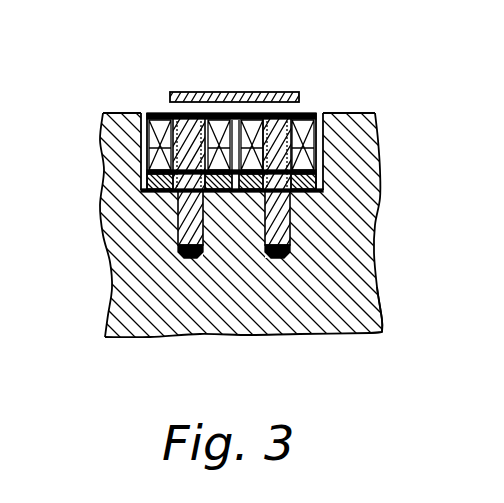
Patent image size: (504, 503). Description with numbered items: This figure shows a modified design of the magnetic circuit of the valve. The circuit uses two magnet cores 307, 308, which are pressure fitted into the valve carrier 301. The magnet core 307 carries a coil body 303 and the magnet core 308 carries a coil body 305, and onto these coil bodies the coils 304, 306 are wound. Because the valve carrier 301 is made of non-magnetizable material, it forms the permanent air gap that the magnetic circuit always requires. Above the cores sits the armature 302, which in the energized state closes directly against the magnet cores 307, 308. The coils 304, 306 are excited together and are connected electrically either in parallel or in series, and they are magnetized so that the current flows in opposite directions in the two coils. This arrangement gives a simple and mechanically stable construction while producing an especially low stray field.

The valve carrier 301 is at (152, 317).
The armature 302 is at (275, 98).
The coil body 303 is at (372, 250).
The coil 304 is at (110, 116).
The coil body 305 is at (145, 170).
The coil 306 is at (307, 142).
The magnet core 307 is at (380, 320).
The magnet core 308 is at (178, 232).